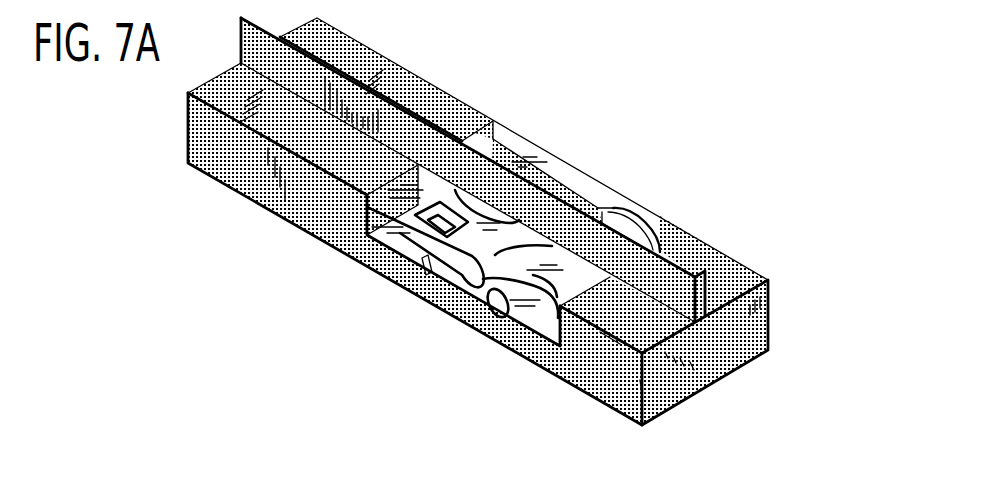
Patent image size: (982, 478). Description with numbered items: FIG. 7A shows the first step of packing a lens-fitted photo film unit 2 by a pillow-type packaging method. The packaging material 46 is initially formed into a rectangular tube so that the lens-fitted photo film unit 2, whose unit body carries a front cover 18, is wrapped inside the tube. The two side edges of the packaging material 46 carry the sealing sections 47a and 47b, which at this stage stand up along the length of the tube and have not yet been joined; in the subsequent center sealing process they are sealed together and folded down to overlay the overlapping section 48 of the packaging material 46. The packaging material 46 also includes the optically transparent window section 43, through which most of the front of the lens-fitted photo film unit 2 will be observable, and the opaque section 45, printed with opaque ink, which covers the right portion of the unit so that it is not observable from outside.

The lens-fitted photo film unit 2 is at (575, 183).
The front cover 18 is at (395, 203).
The window section 43 is at (477, 238).
The opaque section 45 is at (357, 242).
The packaging material 46 is at (757, 247).
The sealing section 47a is at (647, 277).
The sealing section 47b is at (673, 270).
The overlapping section 48 is at (740, 303).